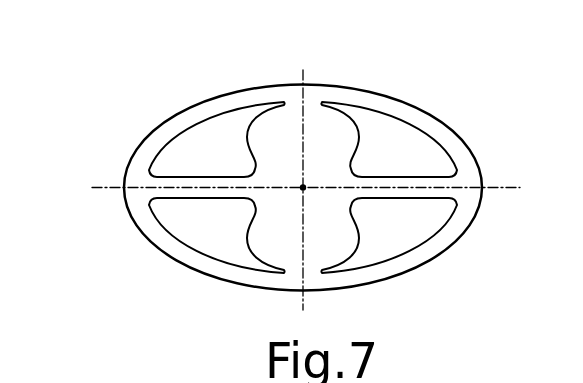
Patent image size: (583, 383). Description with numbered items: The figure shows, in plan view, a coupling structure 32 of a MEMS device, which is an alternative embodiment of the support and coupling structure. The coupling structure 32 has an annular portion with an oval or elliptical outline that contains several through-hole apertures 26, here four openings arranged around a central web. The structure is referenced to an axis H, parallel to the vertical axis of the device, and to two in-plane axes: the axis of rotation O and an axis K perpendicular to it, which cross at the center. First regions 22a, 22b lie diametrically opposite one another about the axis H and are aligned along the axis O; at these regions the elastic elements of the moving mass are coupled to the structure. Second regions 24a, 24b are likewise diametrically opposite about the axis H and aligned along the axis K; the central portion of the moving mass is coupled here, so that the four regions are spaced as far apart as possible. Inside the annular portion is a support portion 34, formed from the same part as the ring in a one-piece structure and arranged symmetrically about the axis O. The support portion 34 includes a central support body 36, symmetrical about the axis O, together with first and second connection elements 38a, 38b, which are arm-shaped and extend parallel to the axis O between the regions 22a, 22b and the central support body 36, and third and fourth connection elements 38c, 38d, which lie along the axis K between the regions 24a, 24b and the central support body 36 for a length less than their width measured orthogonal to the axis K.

The coupling structure 32 is at (100, 102).
The through-hole apertures 26 is at (230, 138).
The first connection element 38a is at (195, 183).
The second connection element 38b is at (422, 182).
The third connection element 38c is at (298, 268).
The fourth connection element 38d is at (297, 107).
The second region 24a is at (318, 280).
The second region 24b is at (313, 85).
The first region 22a is at (135, 191).
The first region 22b is at (463, 180).
The support portion 34 is at (322, 135).
The central support body 36 is at (293, 238).
The axis K is at (303, 70).
The axis H is at (303, 187).
The axis O is at (510, 190).